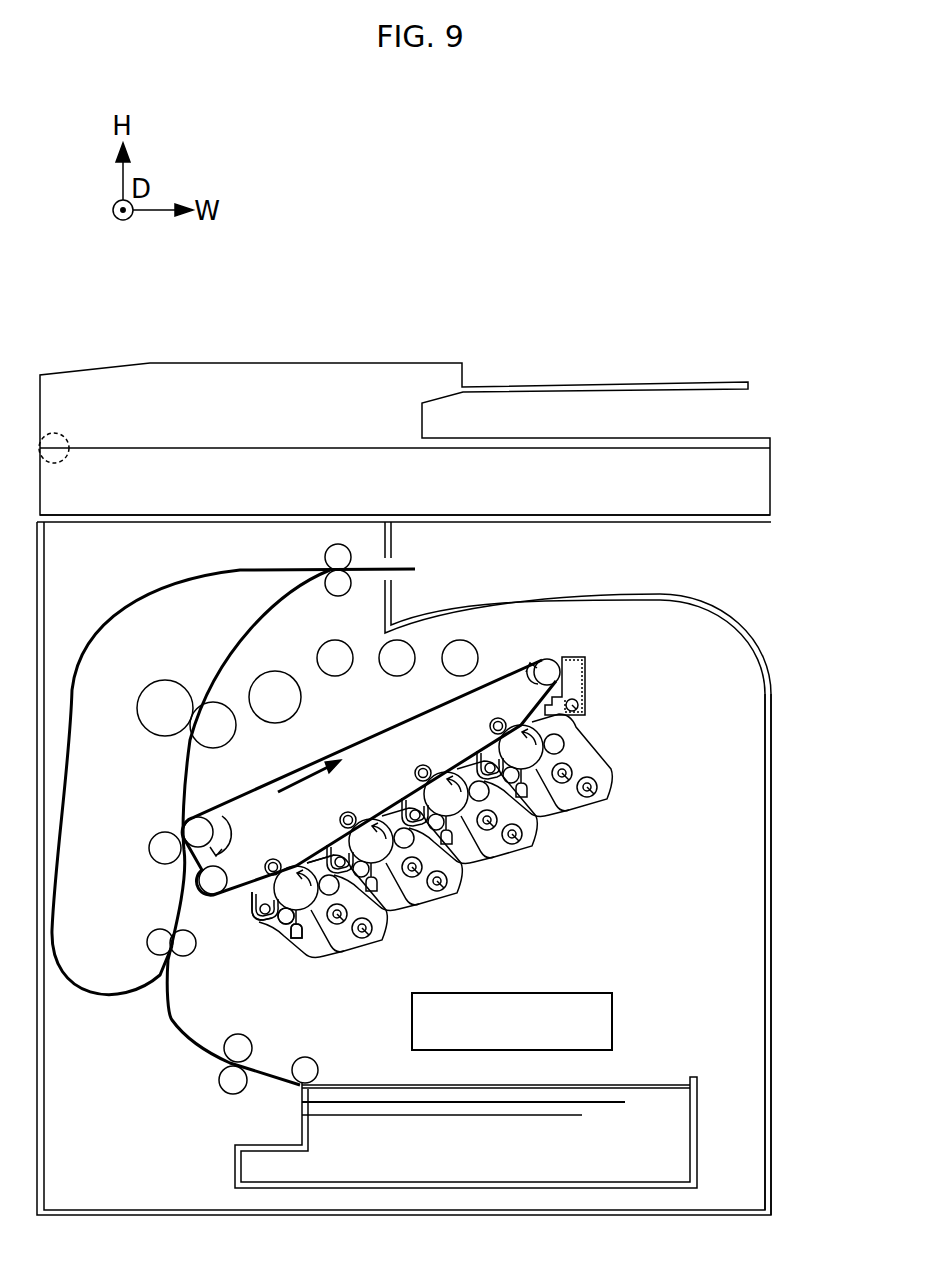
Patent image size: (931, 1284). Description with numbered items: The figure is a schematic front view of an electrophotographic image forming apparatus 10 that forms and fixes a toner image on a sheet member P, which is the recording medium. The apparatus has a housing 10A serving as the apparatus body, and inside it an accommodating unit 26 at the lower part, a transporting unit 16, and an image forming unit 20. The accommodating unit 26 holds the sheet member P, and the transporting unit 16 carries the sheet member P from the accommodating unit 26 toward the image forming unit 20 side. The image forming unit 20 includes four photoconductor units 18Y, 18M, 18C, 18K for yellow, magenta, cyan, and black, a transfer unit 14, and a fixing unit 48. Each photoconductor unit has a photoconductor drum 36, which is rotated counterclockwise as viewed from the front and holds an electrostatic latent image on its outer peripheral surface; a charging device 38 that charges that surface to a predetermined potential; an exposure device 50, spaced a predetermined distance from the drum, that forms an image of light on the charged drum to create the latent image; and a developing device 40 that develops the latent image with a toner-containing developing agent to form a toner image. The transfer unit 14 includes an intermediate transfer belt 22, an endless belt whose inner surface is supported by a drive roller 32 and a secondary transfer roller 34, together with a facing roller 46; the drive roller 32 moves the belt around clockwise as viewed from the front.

The image forming apparatus 10 is at (675, 233).
The housing 10A is at (773, 772).
The transfer unit 14 is at (527, 655).
The transporting unit 16 is at (128, 1131).
The photoconductor unit 18K is at (397, 952).
The photoconductor unit 18C is at (476, 902).
The photoconductor unit 18M is at (553, 858).
The photoconductor unit 18Y is at (617, 815).
The image forming unit 20 is at (662, 664).
The intermediate transfer belt 22 is at (345, 745).
The accommodating unit 26 is at (697, 1118).
The drive roller 32 is at (222, 872).
The secondary transfer roller 34 is at (190, 815).
The photoconductor drum 36 is at (268, 892).
The charging device 38 is at (280, 928).
The developing device 40 is at (401, 926).
The facing roller 46 is at (160, 835).
The fixing unit 48 is at (165, 650).
The exposure device 50 is at (299, 955).
The sheet member P is at (647, 1083).